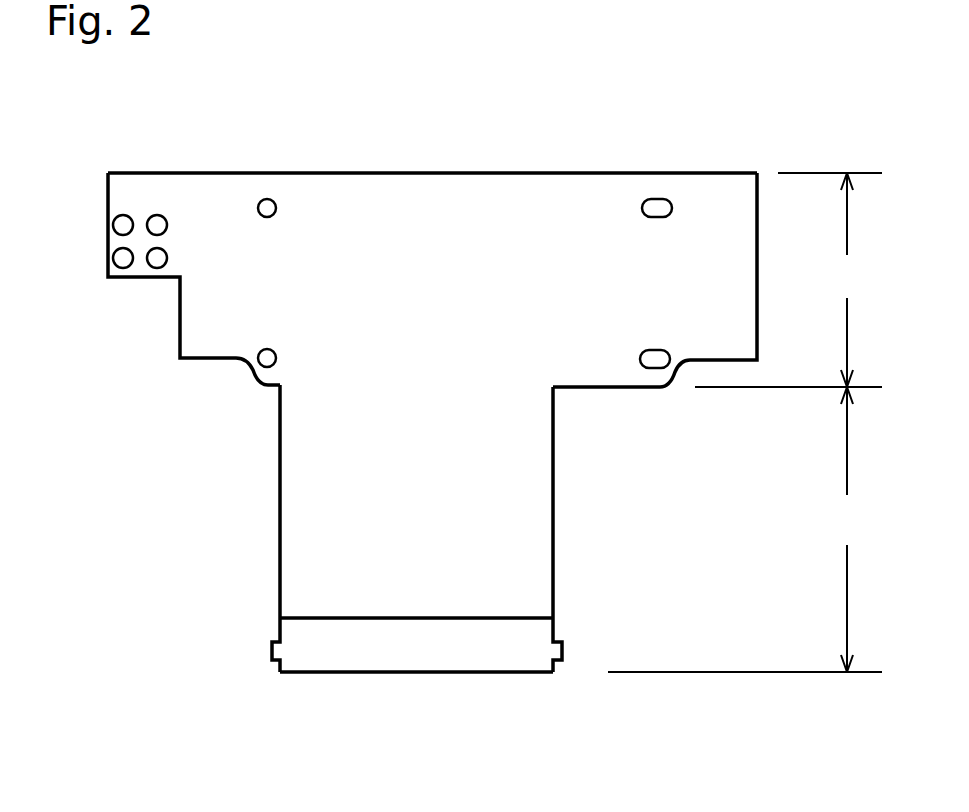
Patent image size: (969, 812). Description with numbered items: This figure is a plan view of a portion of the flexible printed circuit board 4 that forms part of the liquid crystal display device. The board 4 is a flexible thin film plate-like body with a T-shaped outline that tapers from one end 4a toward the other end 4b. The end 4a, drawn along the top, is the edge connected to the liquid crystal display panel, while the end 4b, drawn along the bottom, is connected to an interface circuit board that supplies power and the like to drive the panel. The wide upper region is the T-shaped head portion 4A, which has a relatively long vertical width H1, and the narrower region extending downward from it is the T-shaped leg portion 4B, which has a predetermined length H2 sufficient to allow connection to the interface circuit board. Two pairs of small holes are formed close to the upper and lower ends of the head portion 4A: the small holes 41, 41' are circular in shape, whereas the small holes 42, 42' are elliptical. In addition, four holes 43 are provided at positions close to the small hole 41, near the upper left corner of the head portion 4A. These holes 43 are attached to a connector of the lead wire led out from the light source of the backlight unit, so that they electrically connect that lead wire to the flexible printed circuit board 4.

The flexible printed circuit board 4 is at (441, 35).
The one end 4a is at (452, 173).
The T-shaped head portion 4A is at (530, 245).
The T-shaped leg portion 4B is at (354, 514).
The other end 4b is at (403, 672).
The small hole 41 is at (289, 170).
The small hole 41' is at (230, 388).
The small hole 42 is at (677, 176).
The small hole 42' is at (685, 403).
The holes 43 is at (113, 215).
The vertical width H1 is at (788, 280).
The length H2 is at (745, 529).